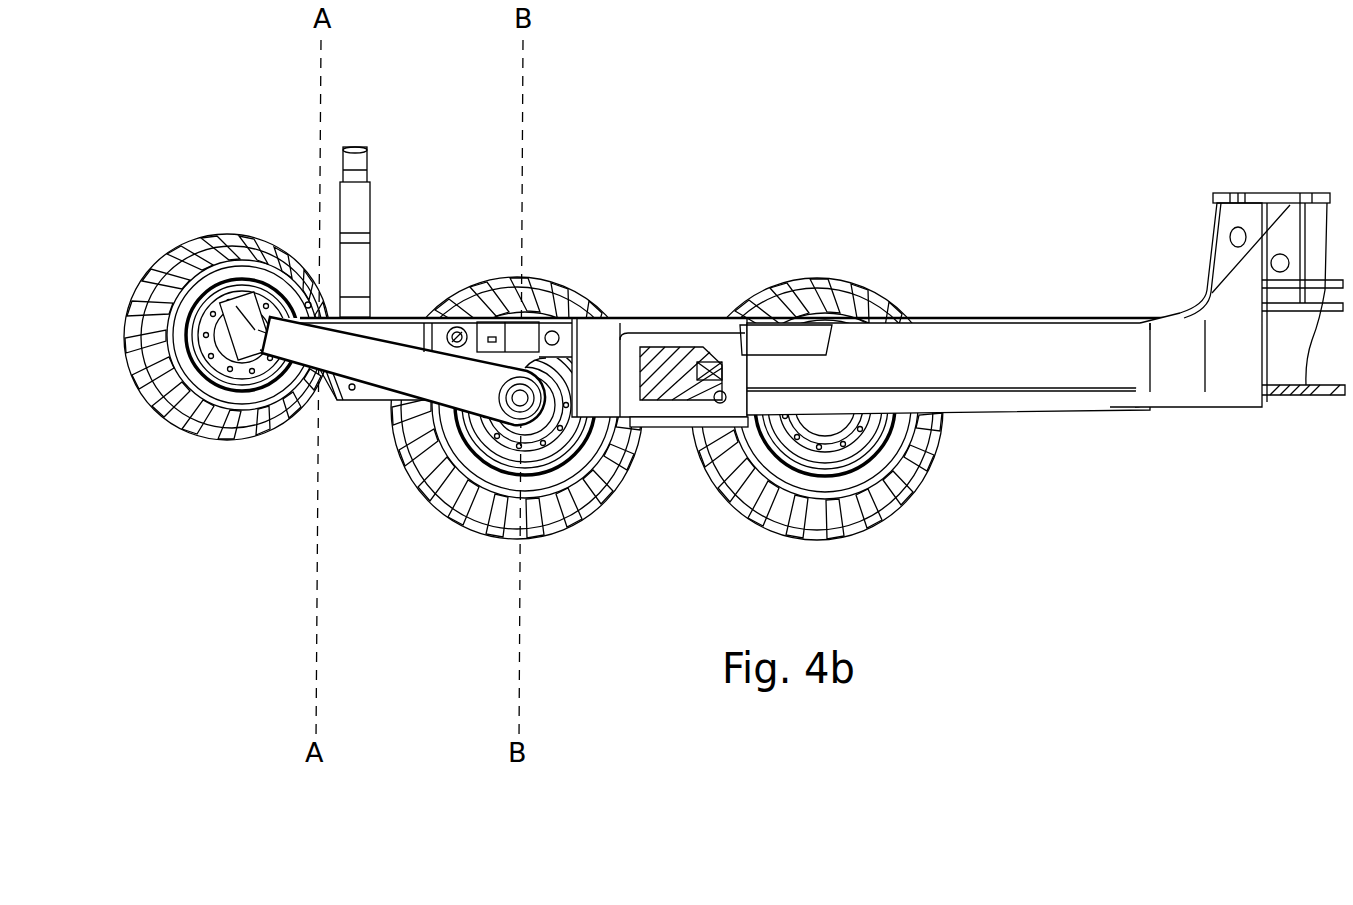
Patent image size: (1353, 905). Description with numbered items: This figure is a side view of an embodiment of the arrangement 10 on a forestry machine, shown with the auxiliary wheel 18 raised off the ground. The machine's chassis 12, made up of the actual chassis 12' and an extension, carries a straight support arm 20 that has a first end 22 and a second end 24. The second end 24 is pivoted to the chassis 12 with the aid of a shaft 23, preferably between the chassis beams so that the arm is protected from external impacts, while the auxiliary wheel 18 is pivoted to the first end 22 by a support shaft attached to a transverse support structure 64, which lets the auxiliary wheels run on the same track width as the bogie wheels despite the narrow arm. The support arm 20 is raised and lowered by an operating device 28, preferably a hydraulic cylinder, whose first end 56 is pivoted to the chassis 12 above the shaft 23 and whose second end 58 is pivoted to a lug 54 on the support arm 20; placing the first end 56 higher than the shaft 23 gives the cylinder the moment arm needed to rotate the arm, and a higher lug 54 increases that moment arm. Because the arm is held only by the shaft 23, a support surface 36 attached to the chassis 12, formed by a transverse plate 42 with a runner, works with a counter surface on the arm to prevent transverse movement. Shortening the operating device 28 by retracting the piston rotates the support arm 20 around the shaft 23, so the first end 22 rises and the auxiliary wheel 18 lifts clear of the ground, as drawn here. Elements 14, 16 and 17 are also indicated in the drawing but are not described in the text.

The arrangement 10 is at (879, 126).
The chassis 12 is at (379, 439).
The actual chassis 12' is at (822, 373).
The axle mount 14 is at (705, 425).
The rear wheel 16 is at (870, 540).
The middle wheel 17 is at (512, 537).
The auxiliary wheel 18 is at (235, 433).
The support arm 20 is at (400, 360).
The first end 22 is at (310, 300).
The shaft 23 is at (518, 432).
The second end 24 is at (517, 370).
The operating device 28 is at (517, 335).
The support surface 36 is at (295, 412).
The transverse plate 42 is at (325, 410).
The lug 54 is at (415, 317).
The first end 56 is at (576, 345).
The second end 58 is at (458, 326).
The transverse support structure 64 is at (237, 312).